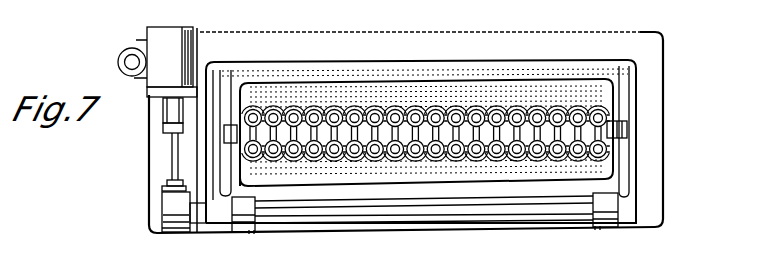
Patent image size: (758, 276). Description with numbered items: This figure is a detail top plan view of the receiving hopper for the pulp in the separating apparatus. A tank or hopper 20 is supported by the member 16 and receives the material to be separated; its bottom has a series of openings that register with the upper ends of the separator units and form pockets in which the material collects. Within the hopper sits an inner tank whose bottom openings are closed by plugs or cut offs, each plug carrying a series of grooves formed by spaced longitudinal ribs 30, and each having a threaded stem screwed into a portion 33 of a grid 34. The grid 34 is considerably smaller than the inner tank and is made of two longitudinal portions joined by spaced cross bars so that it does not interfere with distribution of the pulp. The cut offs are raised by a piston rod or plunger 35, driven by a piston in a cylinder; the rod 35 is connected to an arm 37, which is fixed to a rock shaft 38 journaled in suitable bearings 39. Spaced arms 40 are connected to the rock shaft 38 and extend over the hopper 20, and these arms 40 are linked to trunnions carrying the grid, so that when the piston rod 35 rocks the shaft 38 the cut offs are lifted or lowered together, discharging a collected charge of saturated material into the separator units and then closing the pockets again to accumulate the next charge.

The member 16 is at (665, 33).
The tank or hopper 20 is at (641, 68).
The longitudinal ribs 30 is at (146, 36).
The portion of grid 33 is at (367, 113).
The grid 34 is at (423, 140).
The piston rod or plunger 35 is at (170, 158).
The arm 37 is at (160, 220).
The rock shaft 38 is at (382, 218).
The bearings 39 is at (250, 232).
The spaced arms 40 is at (216, 233).